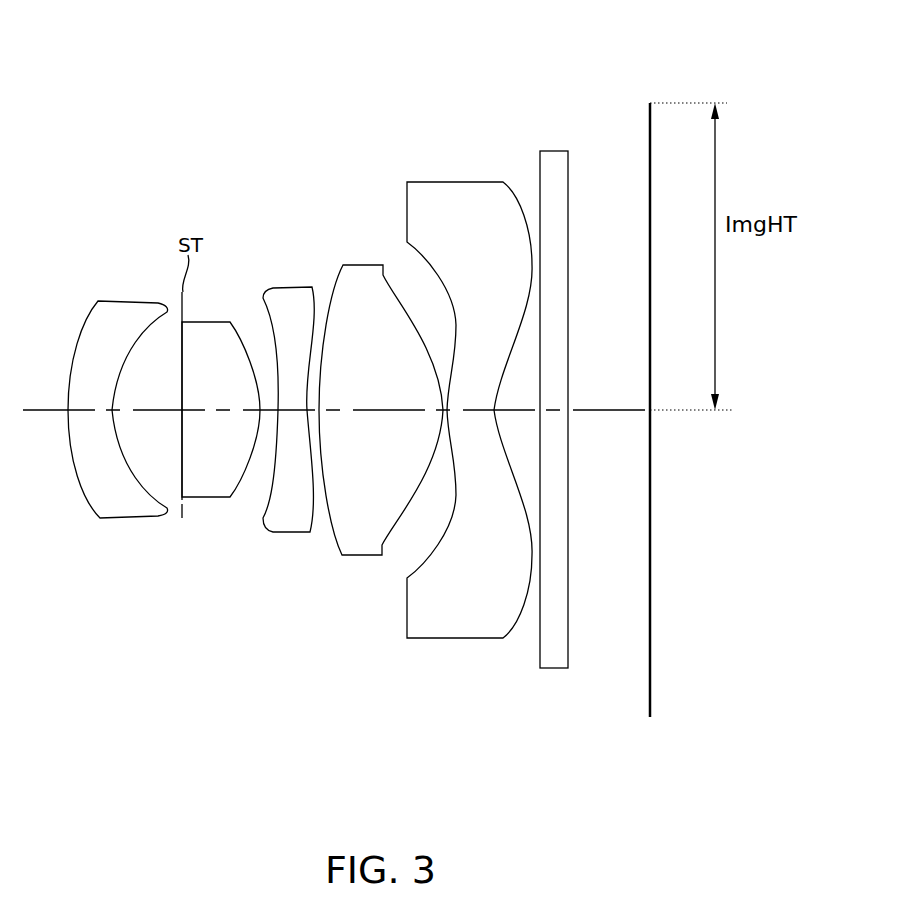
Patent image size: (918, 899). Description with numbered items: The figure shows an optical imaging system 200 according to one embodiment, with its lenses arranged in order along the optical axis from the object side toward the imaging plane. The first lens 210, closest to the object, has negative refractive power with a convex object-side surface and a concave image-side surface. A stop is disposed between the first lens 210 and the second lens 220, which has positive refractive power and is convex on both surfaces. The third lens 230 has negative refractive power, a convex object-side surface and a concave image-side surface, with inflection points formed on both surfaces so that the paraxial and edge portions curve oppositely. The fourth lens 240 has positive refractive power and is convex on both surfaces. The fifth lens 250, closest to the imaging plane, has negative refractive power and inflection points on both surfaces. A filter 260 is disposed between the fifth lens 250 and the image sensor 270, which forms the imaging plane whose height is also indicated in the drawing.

The optical imaging system 200 is at (325, 148).
The first lens 210 is at (120, 508).
The second lens 220 is at (212, 488).
The third lens 230 is at (293, 527).
The fourth lens 240 is at (358, 547).
The fifth lens 250 is at (448, 632).
The filter 260 is at (553, 658).
The image sensor 270 is at (650, 717).